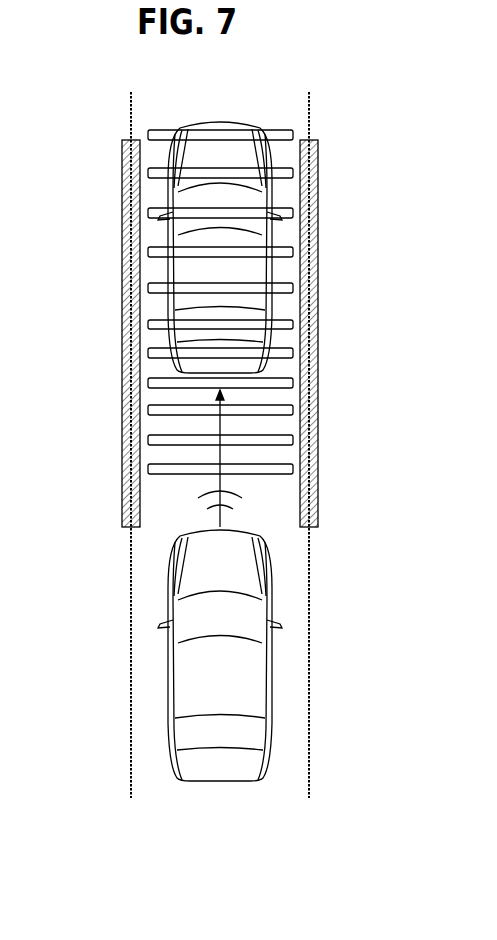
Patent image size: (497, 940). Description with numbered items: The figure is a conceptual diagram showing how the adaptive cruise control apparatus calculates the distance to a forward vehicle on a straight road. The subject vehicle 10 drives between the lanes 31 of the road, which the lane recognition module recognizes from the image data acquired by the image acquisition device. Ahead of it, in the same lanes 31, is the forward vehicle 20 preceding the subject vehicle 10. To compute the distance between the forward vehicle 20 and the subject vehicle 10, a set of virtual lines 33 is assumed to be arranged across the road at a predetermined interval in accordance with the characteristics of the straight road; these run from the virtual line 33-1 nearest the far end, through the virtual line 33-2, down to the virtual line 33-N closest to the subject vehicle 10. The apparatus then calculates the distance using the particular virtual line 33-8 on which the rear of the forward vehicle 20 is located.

The subject vehicle 10 is at (185, 668).
The forward vehicle 20 is at (170, 188).
The lanes 31 is at (123, 343).
The virtual lines 33 is at (225, 302).
The virtual line 33-1 is at (293, 133).
The virtual line 33-2 is at (293, 173).
The virtual line 33-8 is at (293, 383).
The virtual line 33-N is at (293, 468).